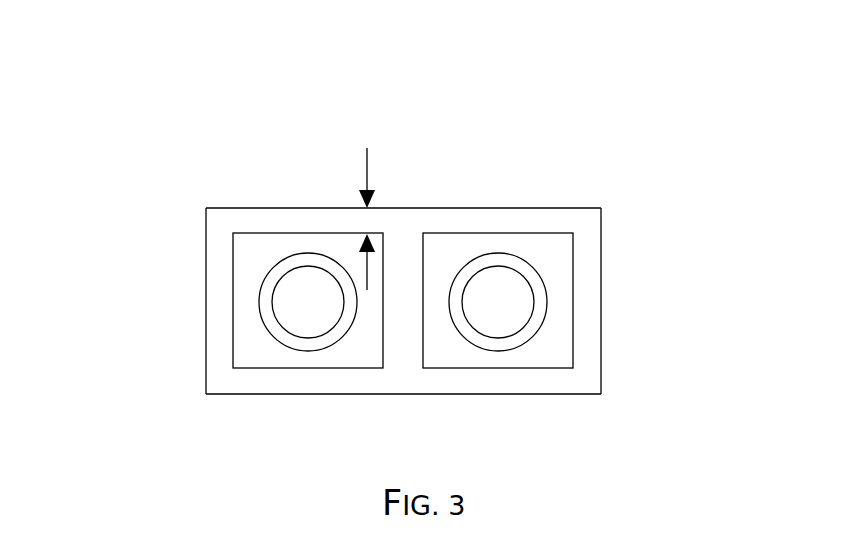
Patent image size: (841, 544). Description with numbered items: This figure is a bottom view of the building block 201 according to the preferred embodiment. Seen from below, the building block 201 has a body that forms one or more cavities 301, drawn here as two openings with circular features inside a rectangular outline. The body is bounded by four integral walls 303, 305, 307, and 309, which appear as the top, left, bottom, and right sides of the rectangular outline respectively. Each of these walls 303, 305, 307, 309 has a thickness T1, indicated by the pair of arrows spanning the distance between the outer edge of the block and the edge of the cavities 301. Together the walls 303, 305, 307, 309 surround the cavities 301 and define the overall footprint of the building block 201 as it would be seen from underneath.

The building block 201 is at (172, 91).
The cavity 301 is at (252, 262).
The integral wall 303 is at (470, 190).
The integral wall 305 is at (190, 318).
The integral wall 307 is at (300, 403).
The integral wall 309 is at (617, 307).
The thickness T1 is at (367, 177).